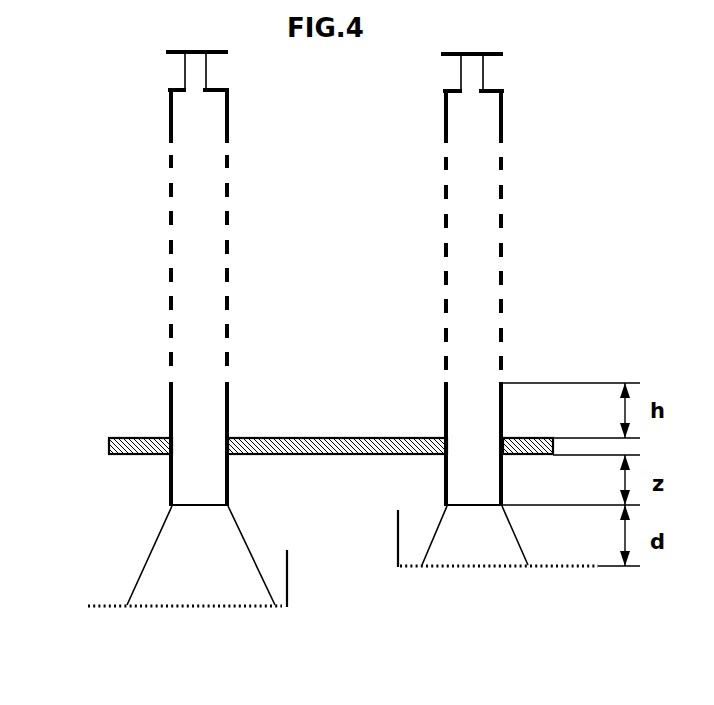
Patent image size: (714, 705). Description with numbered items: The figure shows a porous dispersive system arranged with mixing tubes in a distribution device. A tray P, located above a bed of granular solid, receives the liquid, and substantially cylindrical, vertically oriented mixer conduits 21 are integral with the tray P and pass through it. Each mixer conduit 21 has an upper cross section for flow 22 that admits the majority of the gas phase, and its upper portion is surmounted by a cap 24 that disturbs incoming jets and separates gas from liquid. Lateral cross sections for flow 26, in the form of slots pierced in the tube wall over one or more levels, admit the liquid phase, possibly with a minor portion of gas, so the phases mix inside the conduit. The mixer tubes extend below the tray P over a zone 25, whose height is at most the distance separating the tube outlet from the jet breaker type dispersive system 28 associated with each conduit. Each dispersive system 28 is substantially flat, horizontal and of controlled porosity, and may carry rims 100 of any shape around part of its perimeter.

The mixer conduit 21 is at (160, 113).
The upper cross section for flow 22 is at (470, 87).
The cap 24 is at (167, 52).
The zone below the tray 25 is at (172, 467).
The lateral cross section for flow 26 is at (501, 234).
The jet breaker type dispersive system 28 is at (216, 616).
The rim 100 is at (398, 535).
The tray P is at (128, 437).